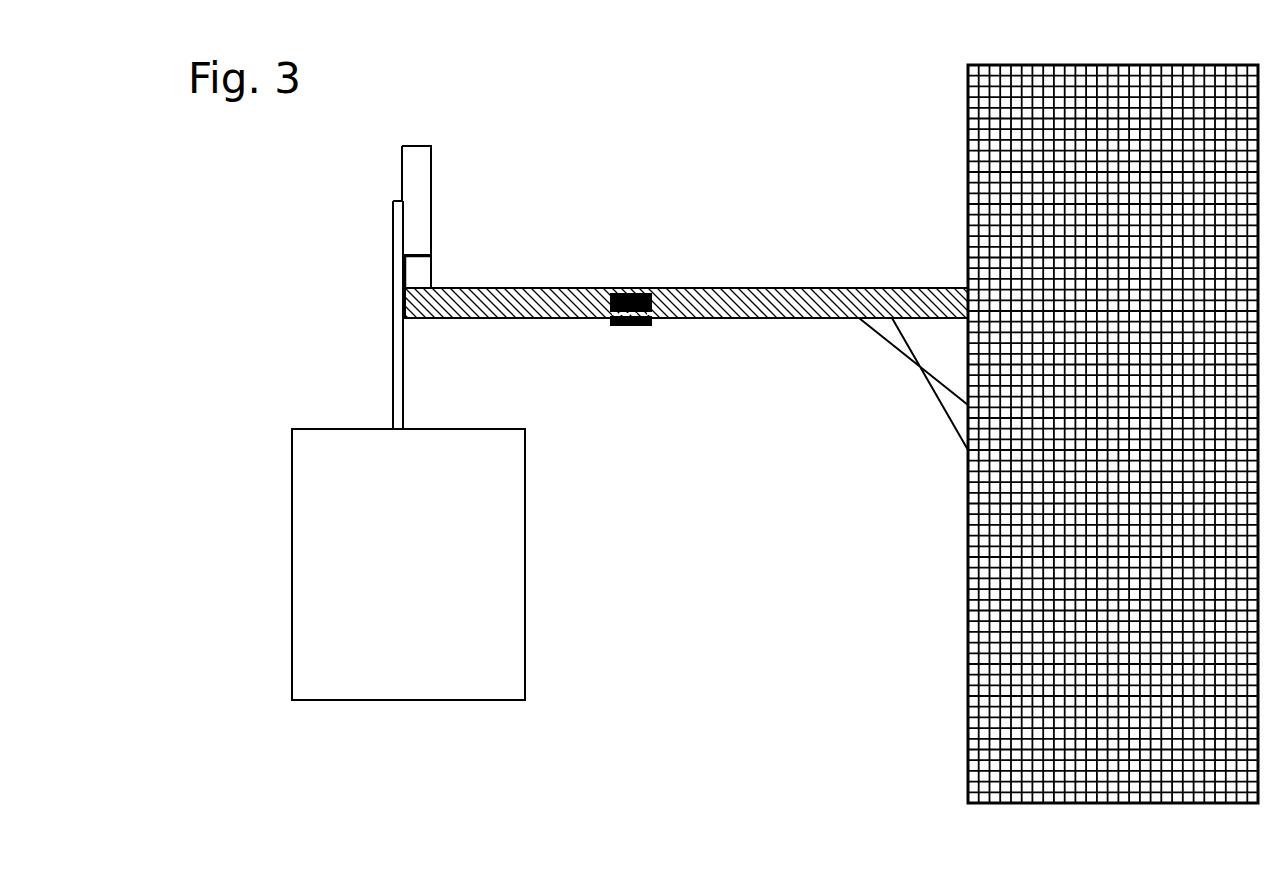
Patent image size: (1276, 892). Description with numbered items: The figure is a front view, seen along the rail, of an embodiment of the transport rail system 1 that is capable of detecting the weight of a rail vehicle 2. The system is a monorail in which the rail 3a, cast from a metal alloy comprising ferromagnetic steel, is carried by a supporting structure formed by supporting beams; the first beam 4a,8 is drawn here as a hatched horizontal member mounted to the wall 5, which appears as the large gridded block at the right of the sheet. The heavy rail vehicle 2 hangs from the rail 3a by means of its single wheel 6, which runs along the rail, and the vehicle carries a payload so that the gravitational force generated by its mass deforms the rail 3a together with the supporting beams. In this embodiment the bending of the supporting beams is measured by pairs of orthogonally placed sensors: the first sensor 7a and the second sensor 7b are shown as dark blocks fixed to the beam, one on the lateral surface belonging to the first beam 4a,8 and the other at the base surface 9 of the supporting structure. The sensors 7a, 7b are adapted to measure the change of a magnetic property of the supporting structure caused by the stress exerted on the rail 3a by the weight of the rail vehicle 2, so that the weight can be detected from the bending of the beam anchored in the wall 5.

The transport rail system 1 is at (268, 795).
The rail vehicle 2 is at (423, 556).
The rail 3a is at (413, 278).
The first beam and lateral surface 4a,8 is at (790, 300).
The wall 5 is at (1035, 745).
The wheel 6 is at (413, 167).
The first sensor 7a is at (628, 326).
The second sensor 7b is at (628, 290).
The base surface 9 is at (532, 318).